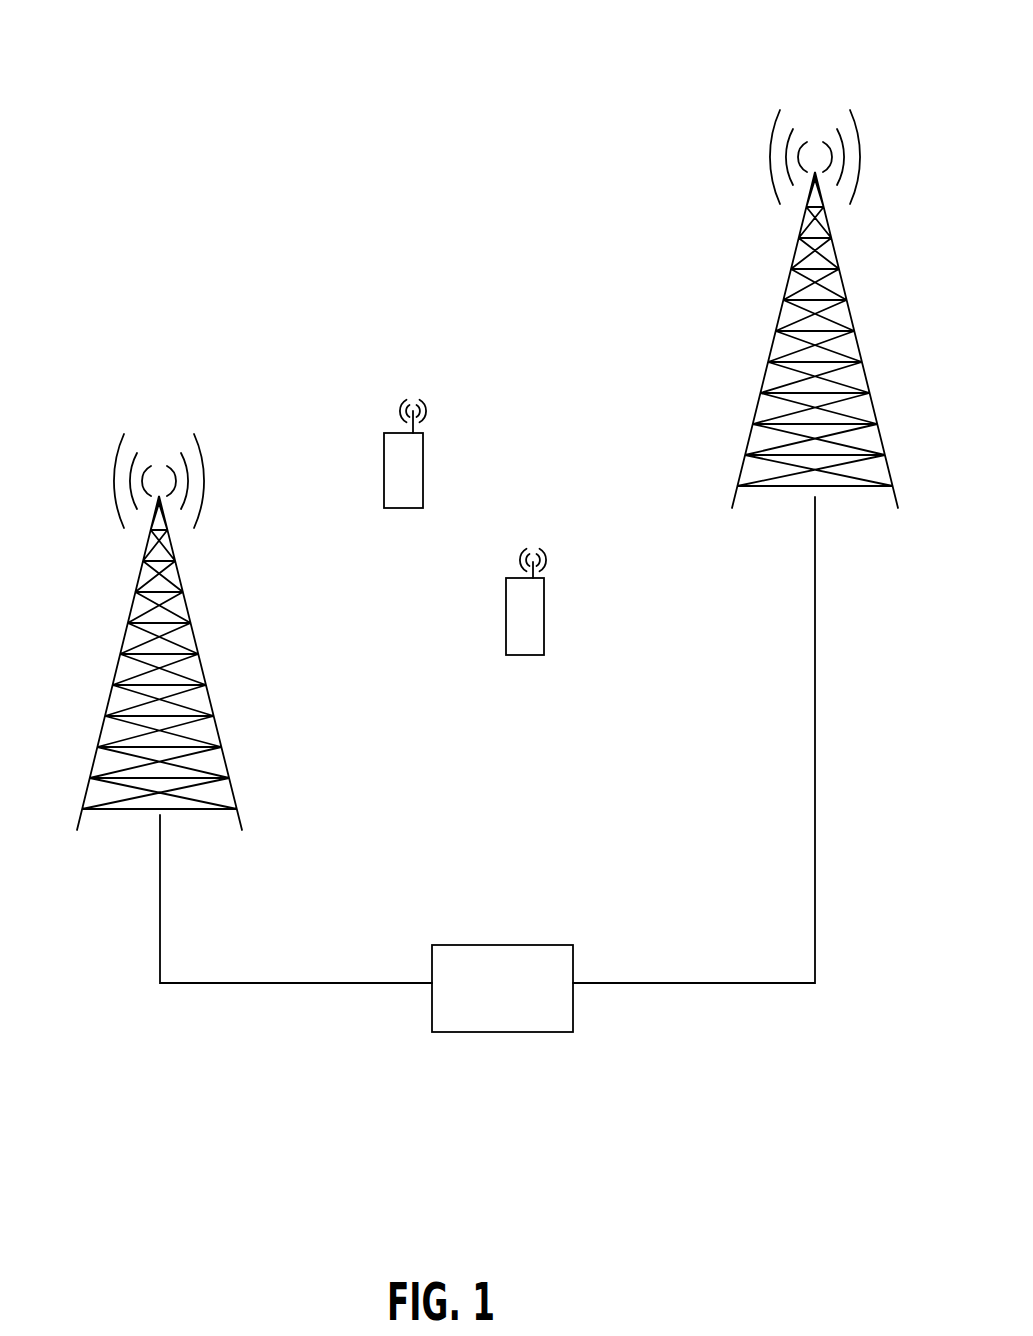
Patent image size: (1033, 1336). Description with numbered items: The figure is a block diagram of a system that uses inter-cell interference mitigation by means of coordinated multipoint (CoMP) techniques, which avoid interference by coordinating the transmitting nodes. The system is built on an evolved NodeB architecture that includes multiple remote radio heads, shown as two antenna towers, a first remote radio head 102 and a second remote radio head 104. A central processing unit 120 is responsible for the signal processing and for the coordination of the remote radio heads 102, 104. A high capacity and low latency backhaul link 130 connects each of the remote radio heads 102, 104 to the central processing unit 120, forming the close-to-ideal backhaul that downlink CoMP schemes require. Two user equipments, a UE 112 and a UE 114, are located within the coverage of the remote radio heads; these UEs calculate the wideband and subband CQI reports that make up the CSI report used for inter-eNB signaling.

The remote radio head 102 is at (78, 832).
The remote radio head 104 is at (885, 504).
The UE 112 is at (413, 509).
The UE 114 is at (538, 658).
The central processing unit 120 is at (538, 1034).
The backhaul link 130 is at (293, 985).